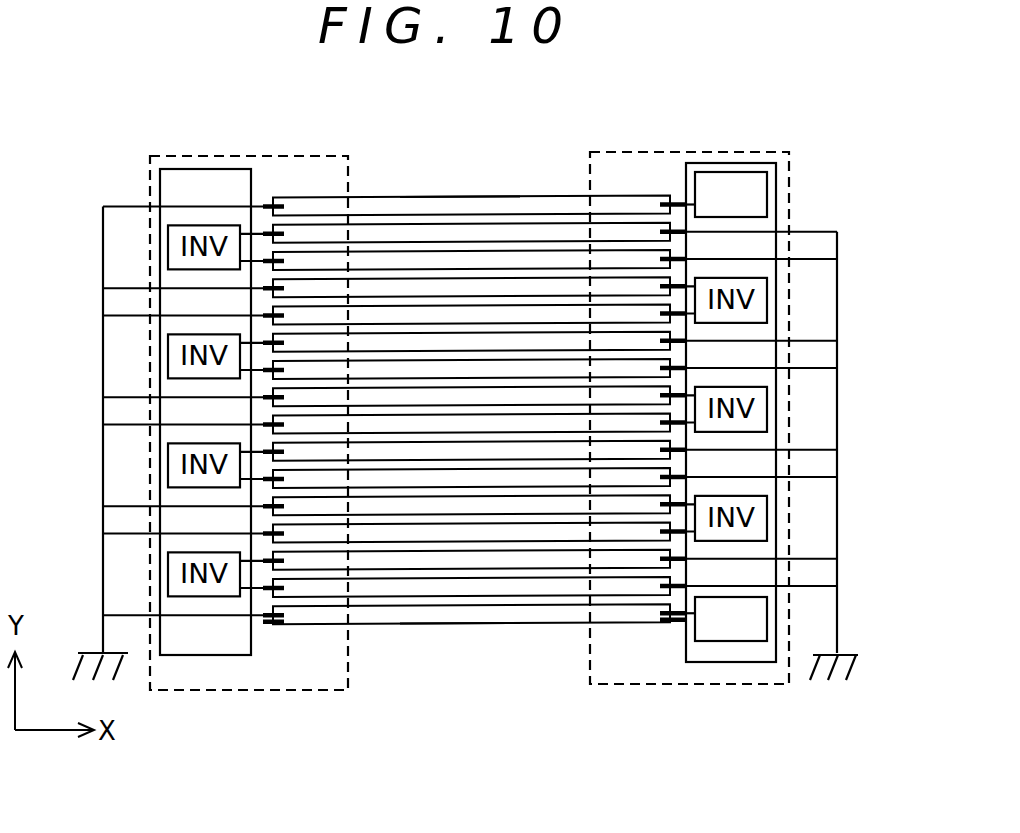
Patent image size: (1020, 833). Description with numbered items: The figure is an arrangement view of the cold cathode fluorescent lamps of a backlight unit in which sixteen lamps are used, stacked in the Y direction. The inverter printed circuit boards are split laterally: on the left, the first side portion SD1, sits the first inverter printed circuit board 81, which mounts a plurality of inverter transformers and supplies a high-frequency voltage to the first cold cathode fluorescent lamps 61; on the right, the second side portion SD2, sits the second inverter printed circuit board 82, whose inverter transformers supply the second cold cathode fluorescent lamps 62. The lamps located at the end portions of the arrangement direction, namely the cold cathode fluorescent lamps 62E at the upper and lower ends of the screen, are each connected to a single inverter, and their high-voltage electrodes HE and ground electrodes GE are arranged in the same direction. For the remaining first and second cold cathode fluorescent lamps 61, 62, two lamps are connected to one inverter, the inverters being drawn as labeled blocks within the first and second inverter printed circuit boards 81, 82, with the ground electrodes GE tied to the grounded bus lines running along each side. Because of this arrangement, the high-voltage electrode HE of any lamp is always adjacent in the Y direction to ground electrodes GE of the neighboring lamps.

The first cold cathode fluorescent lamp 61 is at (405, 255).
The second cold cathode fluorescent lamp 62 is at (540, 305).
The cold cathode fluorescent lamp at screen end portion 62E is at (447, 197).
The first inverter printed circuit board 81 is at (190, 655).
The second inverter printed circuit board 82 is at (765, 662).
The ground electrode GE is at (280, 625).
The high-voltage electrode HE is at (668, 625).
The first side portion SD1 is at (303, 690).
The second side portion SD2 is at (690, 684).